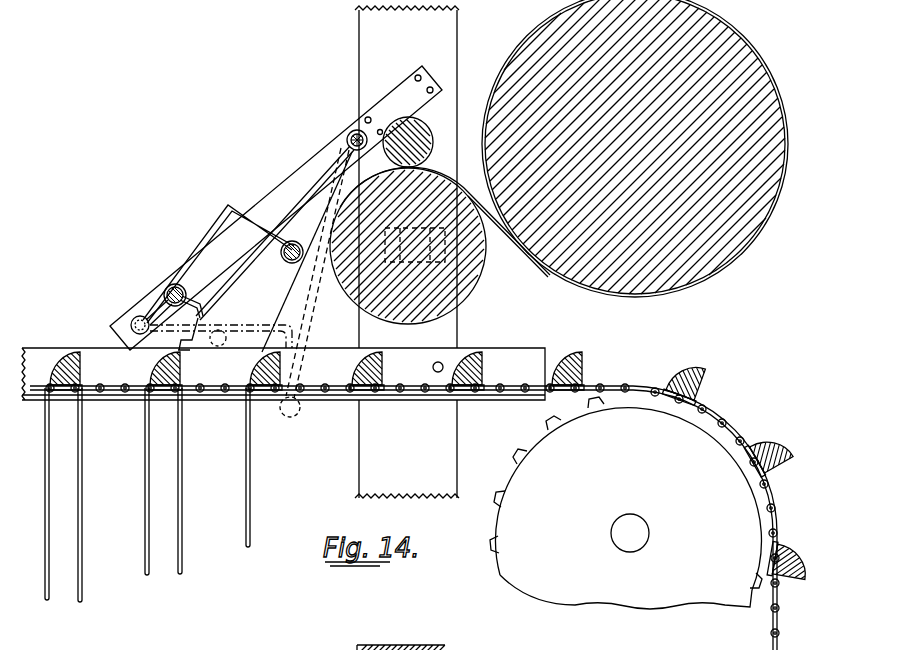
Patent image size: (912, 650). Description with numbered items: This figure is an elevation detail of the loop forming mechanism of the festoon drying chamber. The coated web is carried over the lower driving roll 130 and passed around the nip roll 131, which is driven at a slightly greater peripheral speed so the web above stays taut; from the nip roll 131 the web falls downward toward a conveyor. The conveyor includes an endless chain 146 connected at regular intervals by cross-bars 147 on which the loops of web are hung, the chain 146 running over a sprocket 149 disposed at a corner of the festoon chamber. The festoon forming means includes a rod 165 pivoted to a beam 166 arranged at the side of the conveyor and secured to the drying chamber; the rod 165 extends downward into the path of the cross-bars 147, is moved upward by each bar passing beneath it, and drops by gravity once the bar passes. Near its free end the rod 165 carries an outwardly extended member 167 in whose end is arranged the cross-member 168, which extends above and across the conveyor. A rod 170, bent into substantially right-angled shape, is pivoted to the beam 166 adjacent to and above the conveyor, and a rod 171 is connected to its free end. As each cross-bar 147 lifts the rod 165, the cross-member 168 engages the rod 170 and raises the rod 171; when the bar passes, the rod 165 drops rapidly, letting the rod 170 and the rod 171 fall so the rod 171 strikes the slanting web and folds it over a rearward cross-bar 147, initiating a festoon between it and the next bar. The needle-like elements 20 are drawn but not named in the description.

The needles 20 is at (255, 0).
The lower driving roll 130 is at (652, 284).
The nip roll 131 is at (472, 287).
The endless chain 146 is at (340, 398).
The cross-bars 147 is at (66, 350).
The sprocket 149 is at (597, 588).
The rod 165 is at (331, 170).
The beam 166 is at (281, 196).
The outwardly extended member 167 is at (199, 306).
The cross-member 168 is at (166, 291).
The bent rod 170 is at (216, 221).
The rod 171 is at (251, 282).